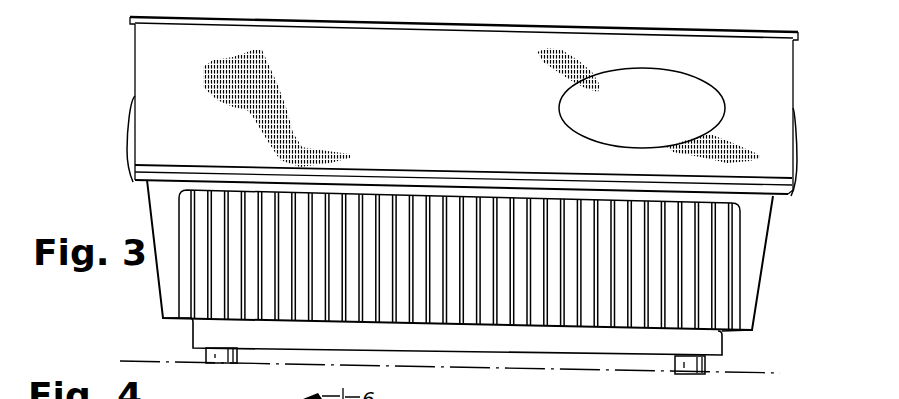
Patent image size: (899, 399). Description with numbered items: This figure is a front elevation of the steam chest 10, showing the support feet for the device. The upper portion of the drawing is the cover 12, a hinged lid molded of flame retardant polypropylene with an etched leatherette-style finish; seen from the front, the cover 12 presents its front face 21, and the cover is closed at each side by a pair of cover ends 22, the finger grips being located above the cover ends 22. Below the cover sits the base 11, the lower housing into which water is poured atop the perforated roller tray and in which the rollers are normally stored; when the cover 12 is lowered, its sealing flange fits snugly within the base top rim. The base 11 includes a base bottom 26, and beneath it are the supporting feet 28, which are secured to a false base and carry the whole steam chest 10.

The steam chest 10 is at (284, 11).
The base 11 is at (766, 237).
The cover 12 is at (488, 29).
The front face 21 is at (697, 45).
The cover ends 22 is at (134, 67).
The base bottom 26 is at (626, 358).
The supporting feet 28 is at (238, 352).